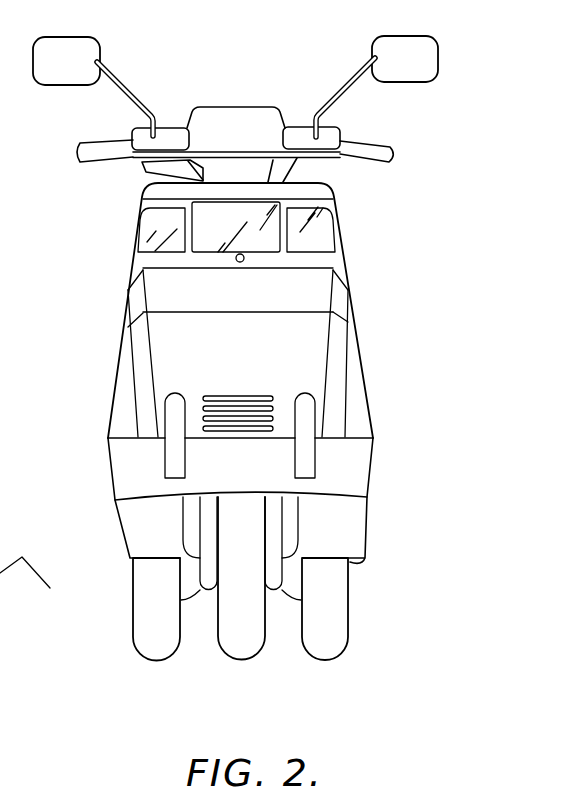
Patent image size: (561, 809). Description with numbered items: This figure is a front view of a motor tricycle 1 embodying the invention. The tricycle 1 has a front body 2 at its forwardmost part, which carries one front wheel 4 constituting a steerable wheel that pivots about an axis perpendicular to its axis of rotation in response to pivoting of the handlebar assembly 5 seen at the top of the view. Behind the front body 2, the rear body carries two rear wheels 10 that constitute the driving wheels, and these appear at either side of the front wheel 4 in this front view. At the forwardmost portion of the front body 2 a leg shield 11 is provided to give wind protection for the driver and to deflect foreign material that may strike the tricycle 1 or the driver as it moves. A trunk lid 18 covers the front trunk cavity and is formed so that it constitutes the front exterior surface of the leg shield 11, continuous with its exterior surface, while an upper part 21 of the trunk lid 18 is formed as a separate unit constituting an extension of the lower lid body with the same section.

The tricycle 1 is at (372, 326).
The front body 2 is at (392, 414).
The front wheel 4 is at (243, 647).
The handlebar assembly 5 is at (382, 149).
The rear wheels 10 is at (150, 638).
The leg shield 11 is at (358, 377).
The trunk lid 18 is at (162, 353).
The upper part of the trunk lid 21 is at (317, 290).